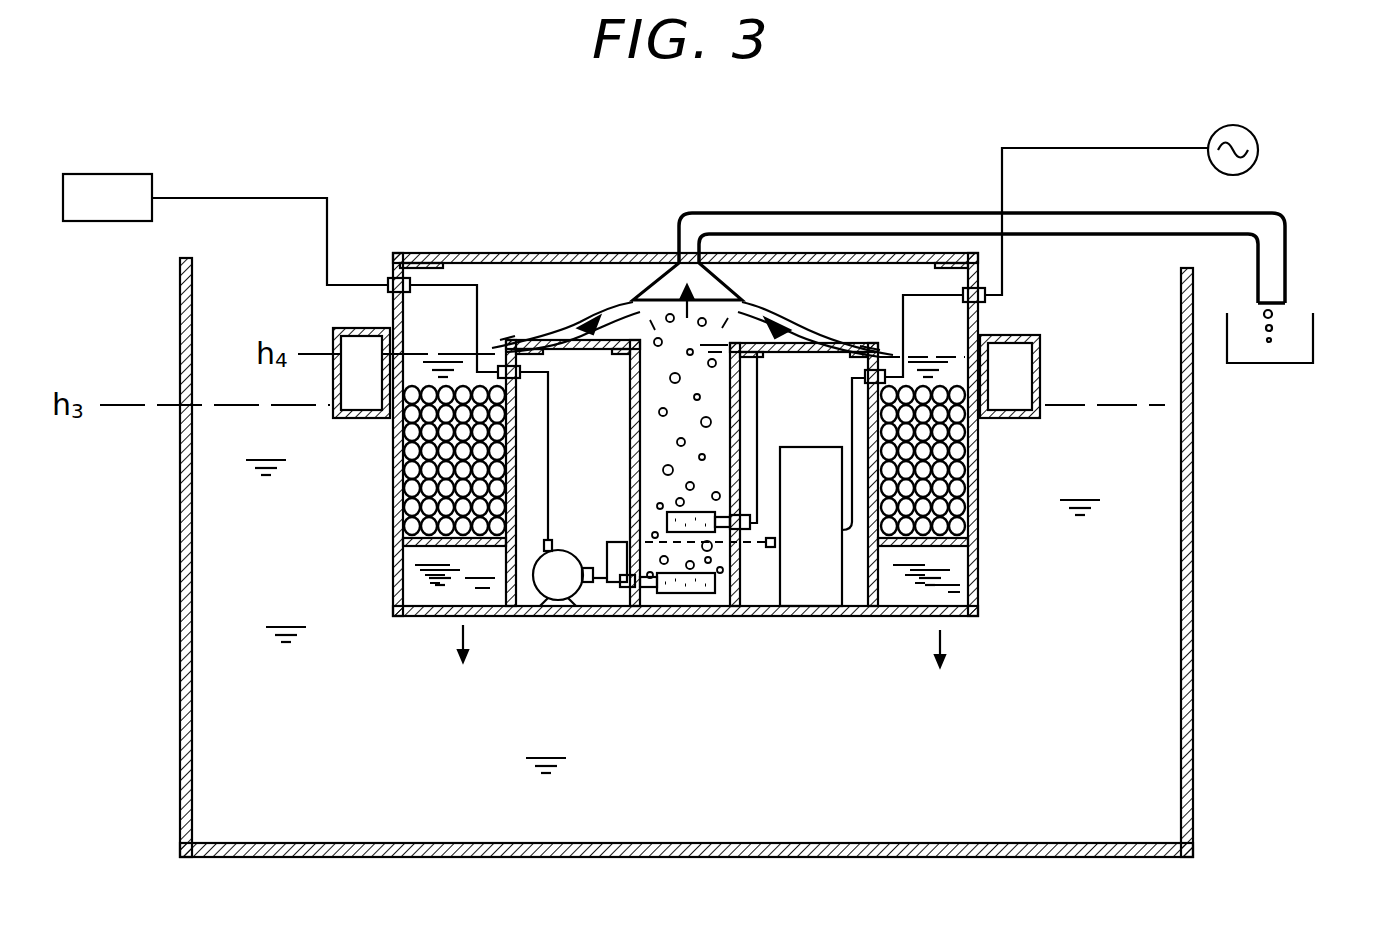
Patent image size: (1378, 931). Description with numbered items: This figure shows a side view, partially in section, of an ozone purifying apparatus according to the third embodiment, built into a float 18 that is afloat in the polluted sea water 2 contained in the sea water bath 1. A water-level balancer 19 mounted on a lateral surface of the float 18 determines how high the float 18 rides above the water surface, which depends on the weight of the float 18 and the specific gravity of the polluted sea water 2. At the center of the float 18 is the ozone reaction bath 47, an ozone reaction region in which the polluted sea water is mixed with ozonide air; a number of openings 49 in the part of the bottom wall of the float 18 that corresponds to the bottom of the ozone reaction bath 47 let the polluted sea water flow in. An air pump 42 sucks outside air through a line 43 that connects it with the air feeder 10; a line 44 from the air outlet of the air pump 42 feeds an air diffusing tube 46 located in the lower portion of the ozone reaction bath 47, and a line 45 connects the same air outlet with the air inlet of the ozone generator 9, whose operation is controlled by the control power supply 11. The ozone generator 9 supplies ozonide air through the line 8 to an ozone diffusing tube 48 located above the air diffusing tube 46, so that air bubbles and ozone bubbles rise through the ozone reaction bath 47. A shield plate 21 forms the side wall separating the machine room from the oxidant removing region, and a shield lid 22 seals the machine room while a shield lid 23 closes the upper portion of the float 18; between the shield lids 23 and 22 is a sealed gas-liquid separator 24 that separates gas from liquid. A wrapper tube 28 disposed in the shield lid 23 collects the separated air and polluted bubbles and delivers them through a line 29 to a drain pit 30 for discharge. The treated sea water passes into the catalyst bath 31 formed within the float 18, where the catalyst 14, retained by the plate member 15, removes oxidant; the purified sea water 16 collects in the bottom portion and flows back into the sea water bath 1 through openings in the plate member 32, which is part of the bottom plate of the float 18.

The sea water bath 1 is at (1195, 480).
The polluted sea water 2 is at (1098, 405).
The line for feeding ozonide air 8 is at (760, 440).
The ozone generator 9 is at (810, 447).
The air feeder 10 is at (95, 175).
The control power supply 11 is at (1260, 144).
The catalyst 14 is at (402, 495).
The plate member 15 is at (410, 573).
The purified sea water 16 is at (402, 606).
The float 18 is at (820, 618).
The water-level balancer 19 is at (1040, 348).
The shield plate 21 is at (526, 436).
The shield lid 22 is at (572, 337).
The shield lid 23 is at (537, 253).
The gas-liquid separator 24 is at (492, 272).
The wrapper tube 28 is at (728, 265).
The line for feeding air and polluted bubbles 29 is at (905, 212).
The drain pit 30 is at (1298, 312).
The catalyst bath 31 is at (443, 362).
The plate member 32 is at (443, 618).
The air pump 42 is at (553, 618).
The line 43 is at (255, 198).
The line 44 is at (612, 618).
The line 45 is at (618, 540).
The air diffusing tube 46 is at (700, 618).
The ozone reaction bath 47 is at (637, 255).
The ozone diffusing tube 48 is at (667, 515).
The openings 49 is at (652, 618).